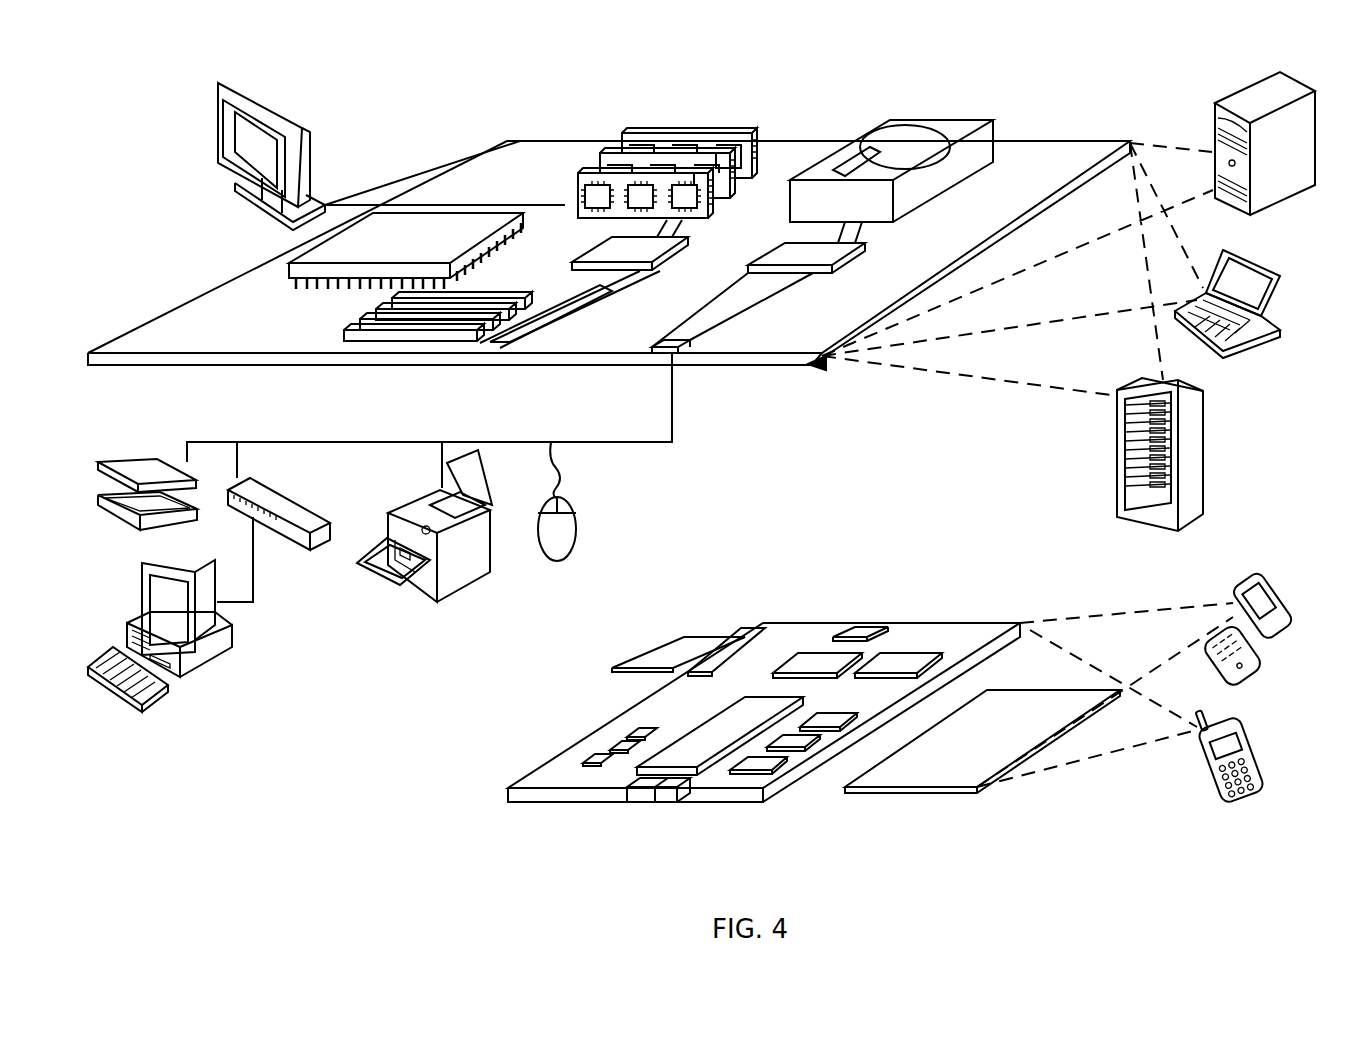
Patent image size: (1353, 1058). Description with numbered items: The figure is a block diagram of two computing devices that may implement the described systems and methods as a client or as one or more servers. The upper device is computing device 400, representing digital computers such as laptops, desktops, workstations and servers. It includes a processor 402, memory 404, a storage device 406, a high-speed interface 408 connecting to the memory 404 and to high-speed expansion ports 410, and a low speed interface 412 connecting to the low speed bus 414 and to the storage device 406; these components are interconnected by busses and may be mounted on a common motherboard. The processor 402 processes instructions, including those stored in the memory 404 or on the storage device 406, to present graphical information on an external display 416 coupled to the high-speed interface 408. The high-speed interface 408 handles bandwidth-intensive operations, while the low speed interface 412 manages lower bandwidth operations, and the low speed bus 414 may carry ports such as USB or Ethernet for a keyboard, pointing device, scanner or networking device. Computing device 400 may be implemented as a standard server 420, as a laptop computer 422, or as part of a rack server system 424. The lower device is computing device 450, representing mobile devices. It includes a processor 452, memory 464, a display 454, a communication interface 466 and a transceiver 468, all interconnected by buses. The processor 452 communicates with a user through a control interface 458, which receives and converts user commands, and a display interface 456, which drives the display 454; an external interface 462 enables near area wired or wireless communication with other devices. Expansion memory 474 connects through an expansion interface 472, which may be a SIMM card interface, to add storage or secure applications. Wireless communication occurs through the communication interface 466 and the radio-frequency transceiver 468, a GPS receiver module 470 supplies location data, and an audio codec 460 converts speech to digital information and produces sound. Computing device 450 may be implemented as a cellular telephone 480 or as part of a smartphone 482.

The computing device 400 is at (426, 115).
The processor 402 is at (298, 265).
The memory 404 is at (647, 135).
The storage device 406 is at (888, 122).
The high-speed interface 408 is at (607, 250).
The high-speed expansion ports 410 is at (373, 325).
The low speed interface 412 is at (787, 253).
The low speed bus 414 is at (680, 355).
The display 416 is at (227, 86).
The standard server 420 is at (1214, 125).
The laptop computer 422 is at (1283, 272).
The rack server system 424 is at (1118, 478).
The computing device 450 is at (487, 796).
The processor 452 is at (693, 757).
The display 454 is at (940, 775).
The display interface 456 is at (763, 775).
The control interface 458 is at (802, 747).
The audio codec 460 is at (825, 727).
The external interface 462 is at (657, 788).
The memory 464 is at (605, 752).
The communication interface 466 is at (820, 660).
The transceiver 468 is at (898, 662).
The GPS receiver module 470 is at (872, 625).
The expansion interface 472 is at (745, 634).
The expansion memory 474 is at (667, 637).
The cellular telephone 480 is at (1250, 578).
The smartphone 482 is at (1205, 745).